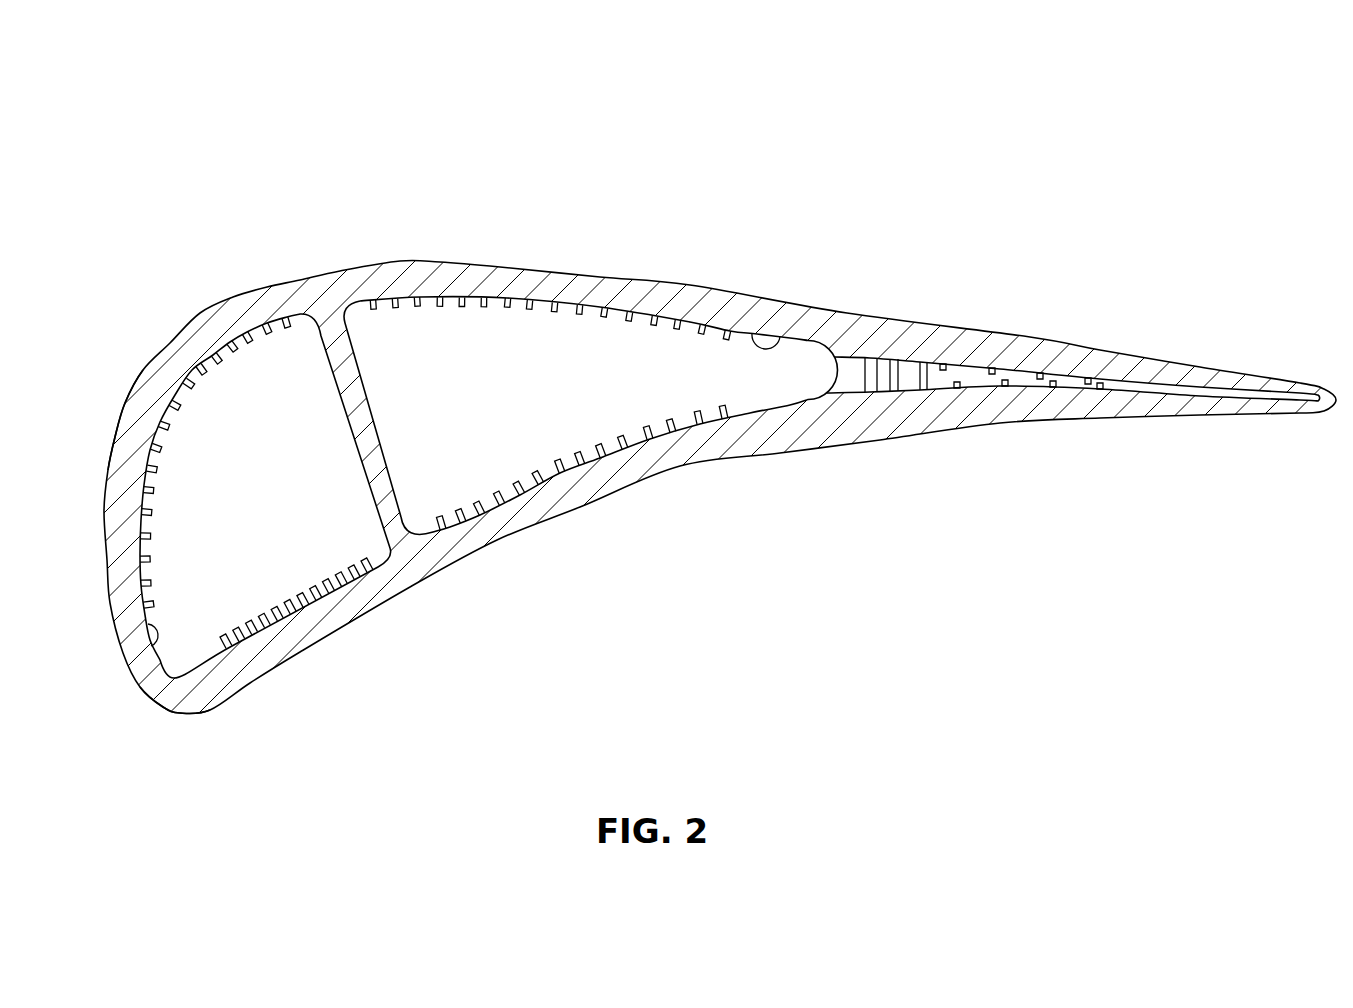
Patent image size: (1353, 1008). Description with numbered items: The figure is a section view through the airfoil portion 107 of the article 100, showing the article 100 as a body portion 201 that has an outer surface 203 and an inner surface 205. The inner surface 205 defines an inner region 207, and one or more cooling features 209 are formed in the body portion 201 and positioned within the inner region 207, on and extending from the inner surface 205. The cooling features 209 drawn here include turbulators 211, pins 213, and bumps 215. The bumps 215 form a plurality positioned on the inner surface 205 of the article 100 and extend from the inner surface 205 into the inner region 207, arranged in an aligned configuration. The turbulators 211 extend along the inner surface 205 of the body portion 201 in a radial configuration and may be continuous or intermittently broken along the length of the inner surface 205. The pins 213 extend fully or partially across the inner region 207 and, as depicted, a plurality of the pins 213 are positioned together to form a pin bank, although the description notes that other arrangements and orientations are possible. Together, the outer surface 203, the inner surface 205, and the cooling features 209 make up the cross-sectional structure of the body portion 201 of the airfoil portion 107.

The article 100 is at (292, 180).
The airfoil portion 107 is at (431, 261).
The body portion 201 is at (165, 690).
The outer surface 203 is at (118, 444).
The inner surface 205 is at (775, 336).
The inner region 207 is at (240, 505).
The cooling features 209 is at (232, 342).
The turbulators 211 is at (503, 296).
The pins 213 is at (945, 362).
The bumps 215 is at (276, 316).